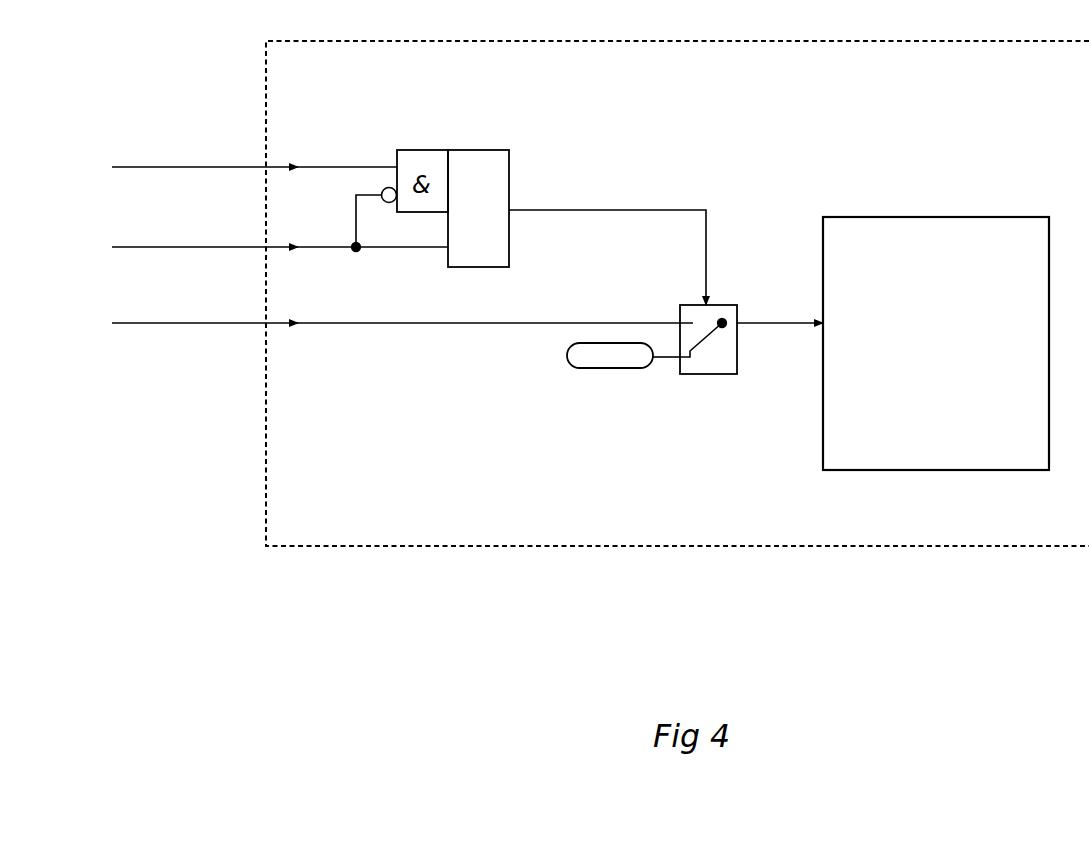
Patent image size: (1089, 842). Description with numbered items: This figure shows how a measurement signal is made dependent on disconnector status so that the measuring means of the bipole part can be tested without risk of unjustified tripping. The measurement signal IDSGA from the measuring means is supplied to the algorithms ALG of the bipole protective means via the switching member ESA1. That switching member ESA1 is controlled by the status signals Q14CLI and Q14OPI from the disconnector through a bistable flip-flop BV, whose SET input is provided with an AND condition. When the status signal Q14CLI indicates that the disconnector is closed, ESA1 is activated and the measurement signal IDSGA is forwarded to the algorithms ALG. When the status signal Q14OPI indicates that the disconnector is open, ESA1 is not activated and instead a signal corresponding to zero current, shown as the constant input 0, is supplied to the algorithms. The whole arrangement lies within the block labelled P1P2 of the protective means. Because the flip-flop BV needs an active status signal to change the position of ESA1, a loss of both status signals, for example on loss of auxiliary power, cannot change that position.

The bistable flip-flop BV is at (486, 157).
The switching member ESA1 is at (697, 359).
The algorithms of the bipole protective means ALG is at (900, 320).
The constant zero input 0 is at (623, 356).
The status signal indicating disconnector Q14 closed Q14CLI is at (254, 149).
The status signal indicating disconnector Q14 open Q14OPI is at (280, 220).
The measurement signal IDSGA is at (402, 303).
The P1/P2 BIP S1/S2 functional block P1P2 is at (515, 522).